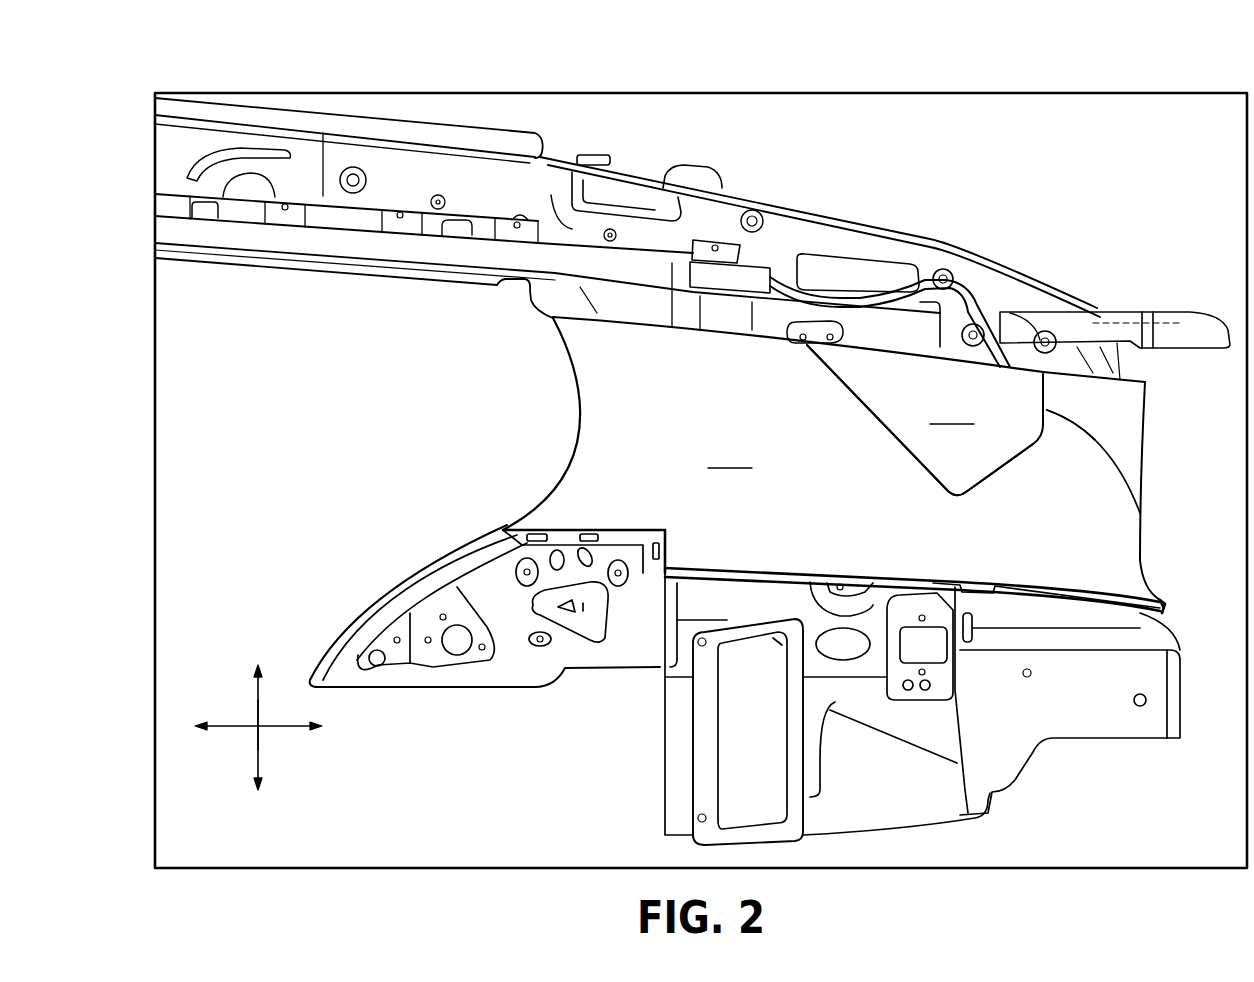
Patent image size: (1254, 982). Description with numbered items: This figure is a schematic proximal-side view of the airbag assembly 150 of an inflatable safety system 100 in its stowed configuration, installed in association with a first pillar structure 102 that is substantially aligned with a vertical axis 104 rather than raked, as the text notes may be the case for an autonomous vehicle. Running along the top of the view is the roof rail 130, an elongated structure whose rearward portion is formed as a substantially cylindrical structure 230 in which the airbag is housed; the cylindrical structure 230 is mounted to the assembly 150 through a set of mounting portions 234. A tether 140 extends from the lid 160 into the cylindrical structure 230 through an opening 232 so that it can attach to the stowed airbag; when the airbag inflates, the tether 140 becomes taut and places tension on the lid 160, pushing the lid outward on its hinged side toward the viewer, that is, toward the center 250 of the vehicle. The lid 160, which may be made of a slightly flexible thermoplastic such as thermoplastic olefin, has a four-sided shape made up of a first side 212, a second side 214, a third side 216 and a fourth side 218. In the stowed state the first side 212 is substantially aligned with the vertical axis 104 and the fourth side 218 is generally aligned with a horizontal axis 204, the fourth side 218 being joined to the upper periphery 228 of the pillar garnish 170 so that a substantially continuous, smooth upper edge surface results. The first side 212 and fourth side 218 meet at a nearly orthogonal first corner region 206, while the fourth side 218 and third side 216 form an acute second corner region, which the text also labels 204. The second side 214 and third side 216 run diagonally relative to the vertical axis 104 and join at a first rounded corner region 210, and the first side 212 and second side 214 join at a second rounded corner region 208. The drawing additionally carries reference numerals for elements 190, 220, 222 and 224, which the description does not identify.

The inflatable safety system 100 is at (1075, 190).
The first pillar structure 102 is at (586, 742).
The vertical axis 104 is at (262, 746).
The roof rail 130 is at (306, 257).
The tether 140 is at (923, 280).
The airbag assembly 150 is at (327, 470).
The lid 160 is at (925, 420).
The pillar garnish 170 is at (770, 404).
The roof structure 190 is at (411, 160).
The horizontal axis 204 is at (798, 349).
The first corner region 206 is at (1057, 386).
The second rounded corner region 208 is at (1140, 513).
The first rounded corner region 210 is at (960, 497).
The first side 212 is at (1052, 434).
The second side 214 is at (1000, 468).
The third side 216 is at (890, 437).
The fourth side 218 is at (943, 370).
The mounting plate 220 is at (810, 276).
The fastener 222 is at (1020, 350).
The flange 224 is at (993, 287).
The upper periphery 228 is at (672, 320).
The cylindrical structure 230 is at (240, 235).
The opening 232 is at (787, 300).
The mounting portions 234 is at (237, 208).
The center of vehicle 250 is at (890, 838).